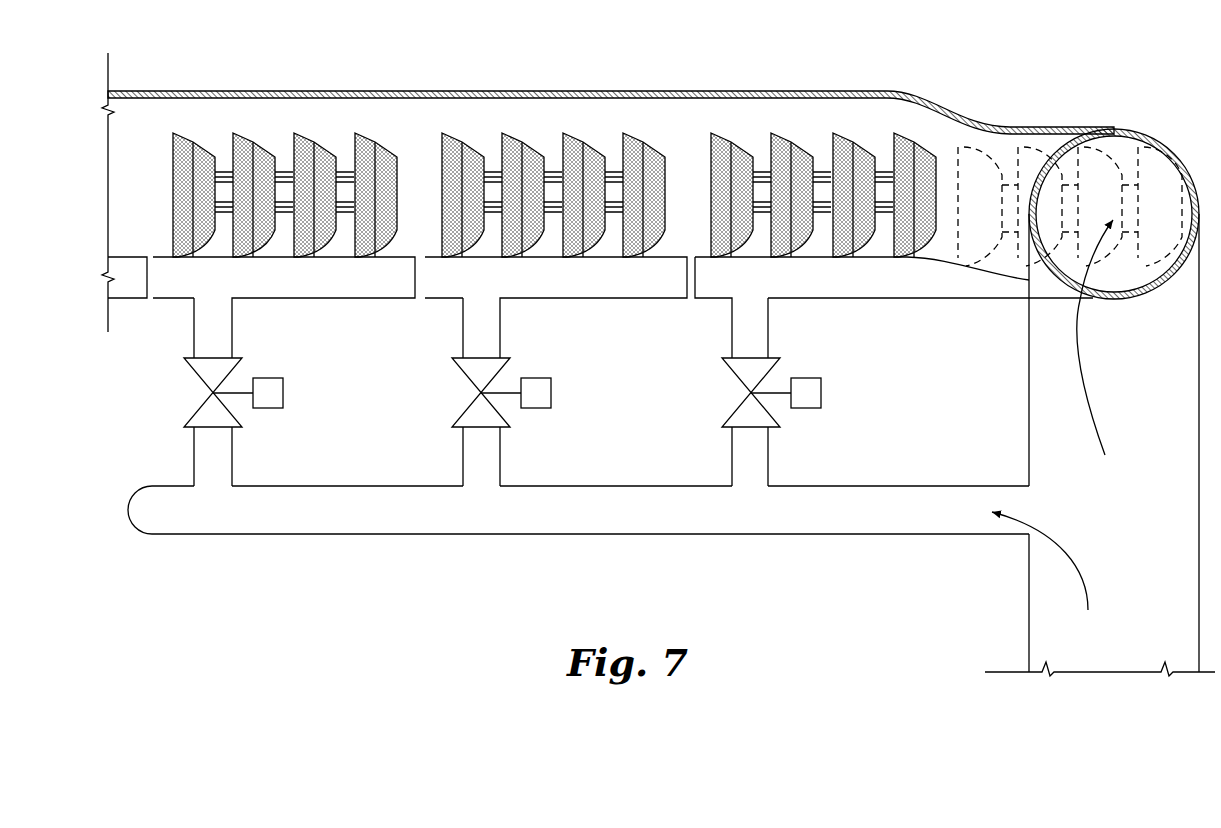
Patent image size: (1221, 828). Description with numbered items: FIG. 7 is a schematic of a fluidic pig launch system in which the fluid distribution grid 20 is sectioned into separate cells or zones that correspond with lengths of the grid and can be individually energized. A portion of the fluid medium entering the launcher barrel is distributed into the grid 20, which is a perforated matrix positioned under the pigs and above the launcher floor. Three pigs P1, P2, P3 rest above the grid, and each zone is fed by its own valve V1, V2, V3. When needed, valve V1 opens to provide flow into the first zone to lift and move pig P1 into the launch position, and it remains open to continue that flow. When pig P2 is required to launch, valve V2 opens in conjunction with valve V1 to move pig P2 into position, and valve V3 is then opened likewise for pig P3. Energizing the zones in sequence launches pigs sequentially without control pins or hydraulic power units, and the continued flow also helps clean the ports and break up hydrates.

The fluid distribution grid 20 is at (158, 312).
The pig P1 is at (858, 140).
The pig P2 is at (590, 142).
The pig P3 is at (323, 143).
The valve V1 is at (755, 400).
The valve V2 is at (485, 397).
The valve V3 is at (217, 397).